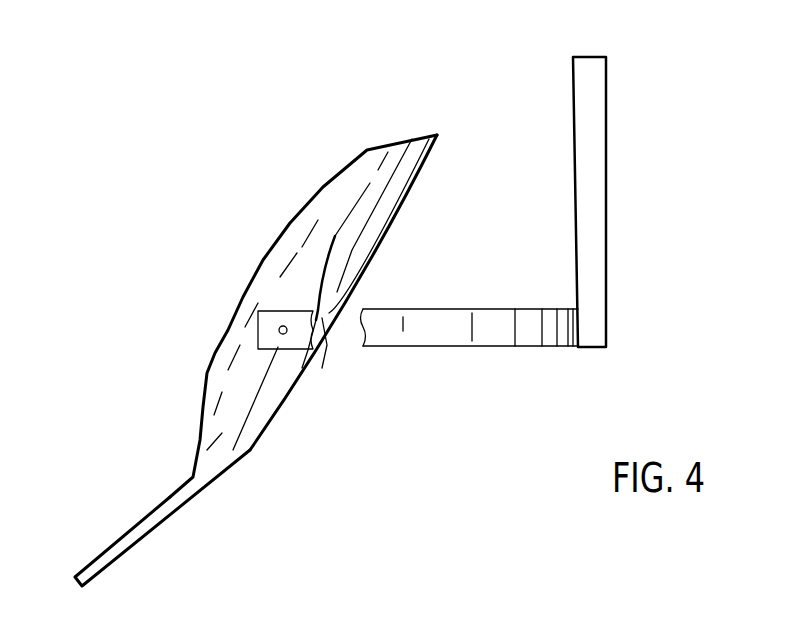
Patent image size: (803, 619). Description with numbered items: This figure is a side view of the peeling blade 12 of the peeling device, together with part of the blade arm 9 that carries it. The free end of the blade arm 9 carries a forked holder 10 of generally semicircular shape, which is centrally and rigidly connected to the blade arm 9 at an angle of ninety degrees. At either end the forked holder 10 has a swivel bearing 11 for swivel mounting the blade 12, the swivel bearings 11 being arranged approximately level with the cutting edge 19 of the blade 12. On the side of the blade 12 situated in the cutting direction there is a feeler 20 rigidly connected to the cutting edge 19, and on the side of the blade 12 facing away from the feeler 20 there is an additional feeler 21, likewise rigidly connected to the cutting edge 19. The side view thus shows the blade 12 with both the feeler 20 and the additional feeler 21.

The blade arm 9 is at (597, 213).
The forked holder 10 is at (282, 313).
The swivel bearing 11 is at (279, 329).
The blade 12 is at (256, 345).
The cutting edge 19 is at (285, 418).
The feeler 20 is at (372, 165).
The additional feeler 21 is at (138, 536).